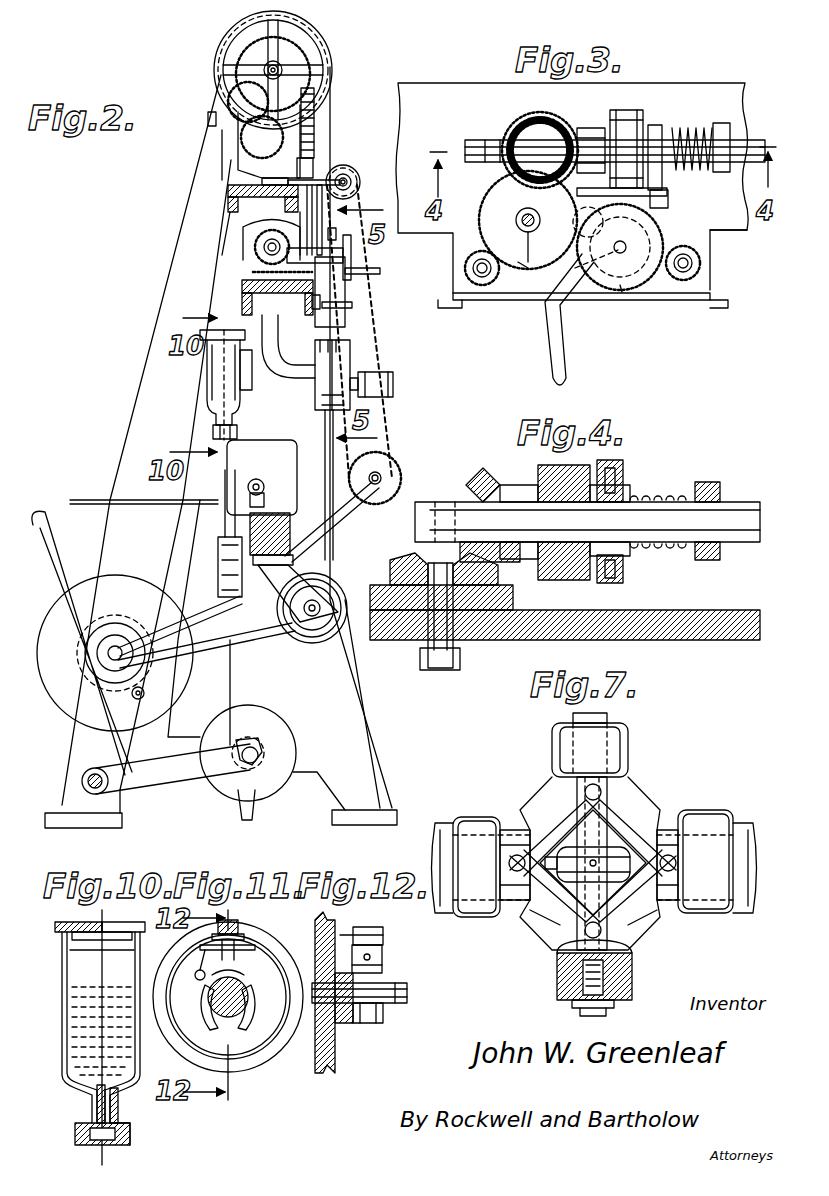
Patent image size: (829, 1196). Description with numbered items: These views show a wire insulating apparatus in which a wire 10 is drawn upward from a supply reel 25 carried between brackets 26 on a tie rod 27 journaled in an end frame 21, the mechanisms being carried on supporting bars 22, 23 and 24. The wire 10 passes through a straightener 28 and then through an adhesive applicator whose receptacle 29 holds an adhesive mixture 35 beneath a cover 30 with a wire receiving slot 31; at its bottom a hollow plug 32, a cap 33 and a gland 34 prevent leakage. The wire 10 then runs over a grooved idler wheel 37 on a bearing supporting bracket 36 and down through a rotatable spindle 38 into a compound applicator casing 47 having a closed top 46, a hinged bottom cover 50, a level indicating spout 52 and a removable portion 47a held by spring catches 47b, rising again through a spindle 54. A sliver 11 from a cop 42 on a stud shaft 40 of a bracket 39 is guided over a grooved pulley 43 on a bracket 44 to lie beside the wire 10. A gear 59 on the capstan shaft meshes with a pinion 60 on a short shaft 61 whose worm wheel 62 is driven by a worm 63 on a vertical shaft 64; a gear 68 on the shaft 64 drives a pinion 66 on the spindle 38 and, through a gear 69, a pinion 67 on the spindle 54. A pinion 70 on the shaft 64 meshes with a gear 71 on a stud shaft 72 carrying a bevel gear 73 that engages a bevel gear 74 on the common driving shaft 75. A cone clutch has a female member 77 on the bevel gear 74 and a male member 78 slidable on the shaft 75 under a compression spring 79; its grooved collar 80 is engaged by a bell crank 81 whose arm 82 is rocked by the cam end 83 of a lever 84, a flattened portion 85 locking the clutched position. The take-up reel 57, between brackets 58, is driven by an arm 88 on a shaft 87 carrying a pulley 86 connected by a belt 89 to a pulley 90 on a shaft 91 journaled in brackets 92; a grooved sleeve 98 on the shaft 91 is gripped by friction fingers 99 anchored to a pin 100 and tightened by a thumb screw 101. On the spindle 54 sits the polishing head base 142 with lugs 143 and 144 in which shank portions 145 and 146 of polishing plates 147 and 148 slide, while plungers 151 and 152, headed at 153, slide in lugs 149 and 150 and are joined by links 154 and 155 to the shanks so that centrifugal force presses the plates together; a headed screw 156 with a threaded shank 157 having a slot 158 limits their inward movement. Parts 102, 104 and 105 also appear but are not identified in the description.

In FIG. 2, the wire 10 is at (232, 655).
In FIG. 10, the wire 10 is at (100, 960).
In FIG. 2, the sliver 11 is at (393, 418).
In FIG. 2, the end frame 21 is at (212, 428).
In FIG. 2, the supporting bar 22 is at (230, 200).
In FIG. 2, the supporting bar 23 is at (245, 300).
In FIG. 3, the supporting bar 23 is at (428, 96).
In FIG. 4, the supporting bar 23 is at (512, 627).
In FIG. 2, the supporting bar 24 is at (298, 553).
In FIG. 2, the wire supply reel 25 is at (278, 786).
In FIG. 2, the brackets 26 is at (190, 770).
In FIG. 2, the tie rod 27 is at (88, 780).
In FIG. 2, the wire straightening device 28 is at (218, 550).
In FIG. 2, the receptacle 29 is at (215, 388).
In FIG. 10, the receptacle 29 is at (63, 1010).
In FIG. 2, the cover 30 is at (215, 330).
In FIG. 10, the cover 30 is at (66, 924).
In FIG. 10, the wire receiving slot 31 is at (130, 925).
In FIG. 10, the hollow plug 32 is at (95, 1102).
In FIG. 10, the cap 33 is at (131, 1133).
In FIG. 10, the gland 34 is at (78, 1140).
In FIG. 10, the adhesive mixture 35 is at (85, 1050).
In FIG. 2, the bearing supporting bracket 36 is at (230, 160).
In FIG. 2, the grooved idler wheel 37 is at (240, 38).
In FIG. 2, the spindle 38 is at (334, 238).
In FIG. 3, the spindle 38 is at (465, 270).
In FIG. 2, the bracket 39 is at (352, 505).
In FIG. 2, the stud shaft 40 is at (381, 478).
In FIG. 2, the cop 42 is at (382, 461).
In FIG. 2, the grooved pulley 43 is at (353, 174).
In FIG. 2, the bracket 44 is at (315, 176).
In FIG. 3, the closed top 46 is at (700, 243).
In FIG. 2, the compound applicator casing 47 is at (330, 325).
In FIG. 2, the removable portion 47a is at (347, 310).
In FIG. 3, the removable portion 47a is at (661, 300).
In FIG. 2, the spring catches 47b is at (318, 306).
In FIG. 2, the bottom cover 50 is at (320, 386).
In FIG. 2, the filling and level indicating spout 52 is at (393, 385).
In FIG. 3, the spindle 54 is at (700, 265).
In FIG. 2, the take-up reel 57 is at (50, 635).
In FIG. 2, the brackets 58 is at (104, 741).
In FIG. 2, the gear 59 is at (288, 55).
In FIG. 2, the pinion 60 is at (208, 120).
In FIG. 2, the short shaft 61 is at (214, 97).
In FIG. 2, the worm wheel 62 is at (256, 146).
In FIG. 2, the worm 63 is at (315, 128).
In FIG. 2, the vertical shaft 64 is at (356, 189).
In FIG. 3, the vertical shaft 64 is at (520, 270).
In FIG. 3, the pinion 66 is at (482, 302).
In FIG. 3, the pinion 67 is at (690, 300).
In FIG. 3, the gear 68 is at (528, 266).
In FIG. 3, the gear 69 is at (623, 292).
In FIG. 3, the pinion 70 is at (507, 213).
In FIG. 3, the gear 71 is at (520, 115).
In FIG. 4, the gear 71 is at (514, 596).
In FIG. 4, the stud shaft 72 is at (436, 632).
In FIG. 3, the bevel gear 73 is at (556, 130).
In FIG. 4, the bevel gear 73 is at (402, 578).
In FIG. 3, the bevel gear 74 is at (584, 126).
In FIG. 4, the bevel gear 74 is at (478, 485).
In FIG. 2, the common driving shaft 75 is at (255, 252).
In FIG. 3, the common driving shaft 75 is at (478, 143).
In FIG. 4, the common driving shaft 75 is at (740, 505).
In FIG. 3, the female clutch member 77 is at (620, 122).
In FIG. 4, the female clutch member 77 is at (540, 470).
In FIG. 4, the male clutch member 78 is at (612, 464).
In FIG. 3, the compression spring 79 is at (690, 130).
In FIG. 4, the compression spring 79 is at (655, 497).
In FIG. 3, the grooved collar 80 is at (660, 130).
In FIG. 4, the grooved collar 80 is at (628, 492).
In FIG. 3, the bell crank 81 is at (668, 201).
In FIG. 4, the bell crank 81 is at (625, 573).
In FIG. 3, the arm 82 is at (636, 220).
In FIG. 3, the cam end 83 is at (600, 258).
In FIG. 2, the lever 84 is at (380, 272).
In FIG. 3, the lever 84 is at (552, 328).
In FIG. 3, the flattened portion 85 is at (600, 225).
In FIG. 2, the pulley 86 is at (90, 658).
In FIG. 2, the shaft 87 is at (108, 660).
In FIG. 2, the arm 88 is at (138, 700).
In FIG. 2, the belt 89 is at (264, 650).
In FIG. 2, the pulley 90 is at (338, 615).
In FIG. 11, the pulley 90 is at (268, 945).
In FIG. 12, the pulley 90 is at (330, 1050).
In FIG. 2, the shaft 91 is at (314, 618).
In FIG. 12, the shaft 91 is at (400, 991).
In FIG. 2, the brackets 92 is at (290, 576).
In FIG. 11, the grooved sleeve 98 is at (246, 988).
In FIG. 12, the grooved sleeve 98 is at (382, 980).
In FIG. 11, the friction fingers 99 is at (247, 1010).
In FIG. 12, the friction fingers 99 is at (372, 1024).
In FIG. 11, the pin 100 is at (228, 932).
In FIG. 12, the pin 100 is at (378, 933).
In FIG. 11, the thumb screw 101 is at (198, 980).
In FIG. 2, the rod 102 is at (95, 500).
In FIG. 2, the boss 104 is at (258, 480).
In FIG. 2, the lug 105 is at (261, 497).
In FIG. 7, the base 142 is at (552, 790).
In FIG. 7, the lug 143 is at (622, 744).
In FIG. 7, the lug 144 is at (633, 977).
In FIG. 7, the shank portion 145 is at (630, 792).
In FIG. 7, the shank portion 146 is at (585, 905).
In FIG. 7, the polishing plate 147 is at (670, 818).
In FIG. 7, the polishing plate 148 is at (555, 905).
In FIG. 7, the lug 149 is at (475, 826).
In FIG. 7, the lug 150 is at (720, 816).
In FIG. 7, the plunger 151 is at (512, 886).
In FIG. 7, the plunger 152 is at (680, 886).
In FIG. 7, the head 153 is at (745, 836).
In FIG. 7, the links 154 is at (548, 822).
In FIG. 7, the links 155 is at (628, 912).
In FIG. 7, the headed screw 156 is at (586, 1010).
In FIG. 7, the shank 157 is at (572, 1003).
In FIG. 7, the slot 158 is at (633, 996).